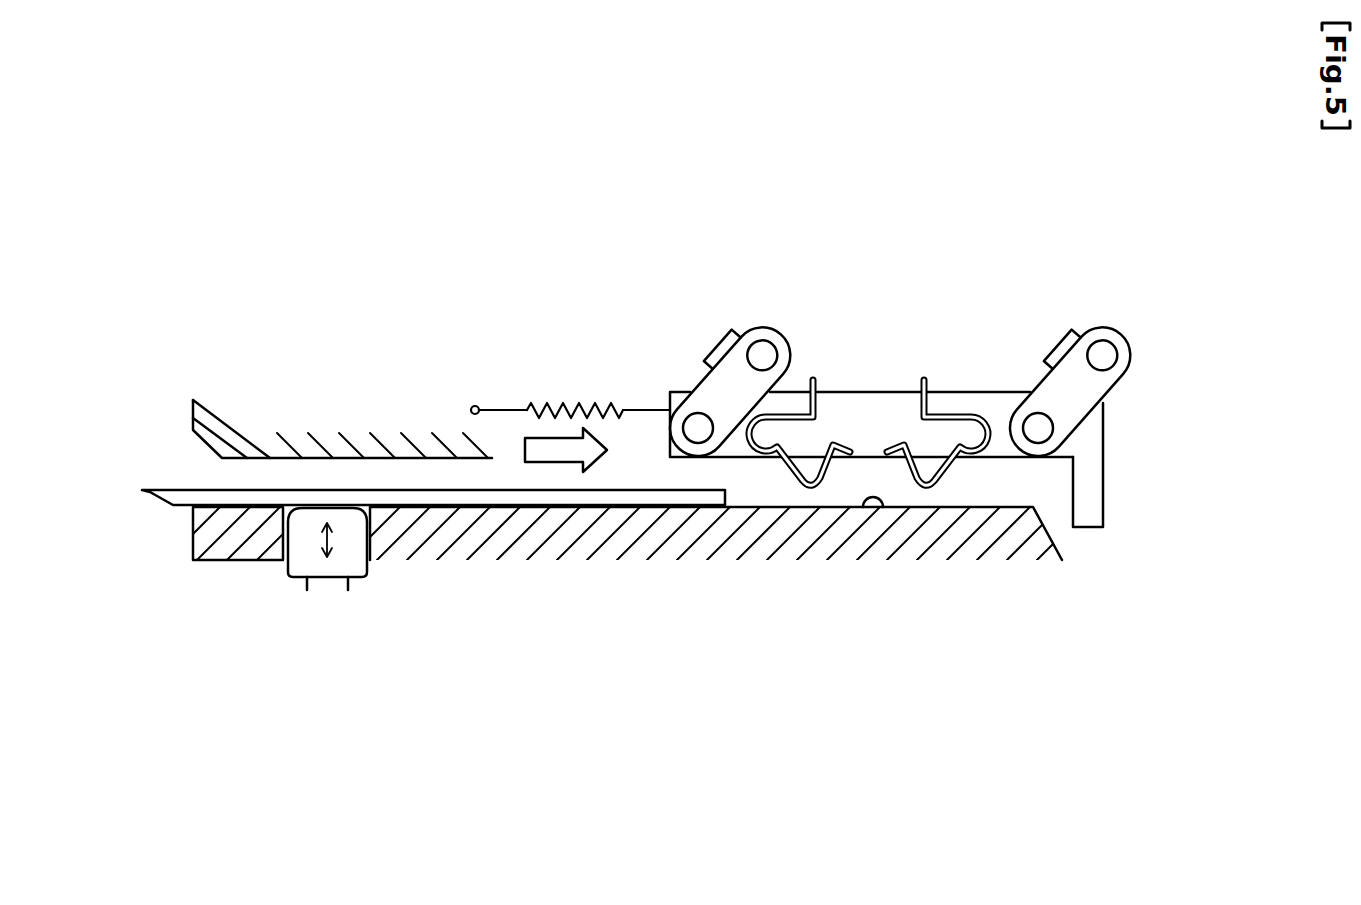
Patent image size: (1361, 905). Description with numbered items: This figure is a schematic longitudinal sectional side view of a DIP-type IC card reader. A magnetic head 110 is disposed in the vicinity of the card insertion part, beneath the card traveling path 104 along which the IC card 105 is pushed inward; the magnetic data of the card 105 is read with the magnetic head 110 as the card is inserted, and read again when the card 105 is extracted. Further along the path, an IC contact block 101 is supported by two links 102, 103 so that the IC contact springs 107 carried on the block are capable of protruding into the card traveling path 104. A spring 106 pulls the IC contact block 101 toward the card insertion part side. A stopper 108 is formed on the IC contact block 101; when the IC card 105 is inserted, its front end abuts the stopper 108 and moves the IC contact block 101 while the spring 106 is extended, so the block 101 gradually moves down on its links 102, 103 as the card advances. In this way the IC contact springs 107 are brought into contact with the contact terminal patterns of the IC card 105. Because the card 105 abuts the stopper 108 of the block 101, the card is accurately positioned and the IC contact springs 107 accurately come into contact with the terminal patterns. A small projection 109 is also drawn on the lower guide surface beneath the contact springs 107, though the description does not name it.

The IC contact block 101 is at (872, 405).
The link 102 is at (758, 327).
The link 103 is at (1105, 340).
The card traveling path 104 is at (422, 457).
The IC card 105 is at (560, 502).
The spring 106 is at (538, 400).
The IC contact spring 107 is at (800, 478).
The stopper 108 is at (1097, 510).
The projection / bump 109 is at (878, 498).
The magnetic head 110 is at (307, 513).